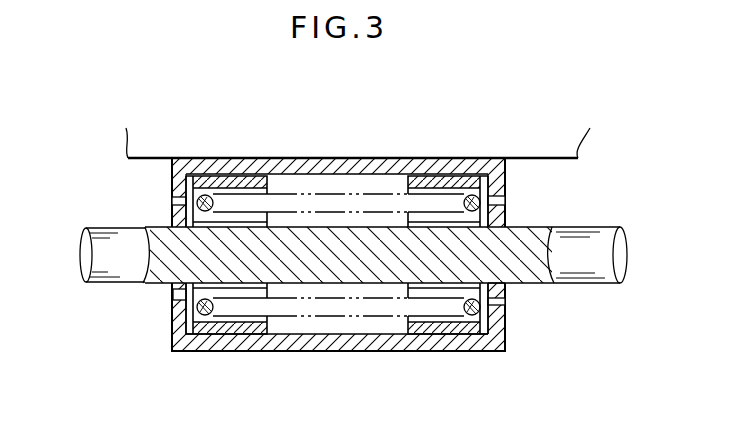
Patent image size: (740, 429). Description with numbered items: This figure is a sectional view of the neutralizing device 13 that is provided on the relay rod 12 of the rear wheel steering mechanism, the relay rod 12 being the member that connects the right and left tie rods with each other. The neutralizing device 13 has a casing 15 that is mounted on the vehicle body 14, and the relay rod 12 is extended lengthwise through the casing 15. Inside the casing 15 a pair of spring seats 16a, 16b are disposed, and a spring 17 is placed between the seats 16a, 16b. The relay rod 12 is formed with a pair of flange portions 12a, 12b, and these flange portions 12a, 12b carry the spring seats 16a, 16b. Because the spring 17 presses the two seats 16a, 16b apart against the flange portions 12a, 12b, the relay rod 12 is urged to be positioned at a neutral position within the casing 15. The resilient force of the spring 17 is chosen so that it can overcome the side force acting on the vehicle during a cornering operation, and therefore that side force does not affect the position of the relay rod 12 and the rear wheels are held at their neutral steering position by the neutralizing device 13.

The relay rod 12 is at (598, 227).
The flange portion 12a is at (172, 292).
The flange portion 12b is at (498, 289).
The neutralizing device 13 is at (168, 327).
The vehicle body 14 is at (542, 158).
The casing 15 is at (462, 352).
The spring seat 16a is at (213, 183).
The spring seat 16b is at (463, 182).
The spring 17 is at (352, 194).